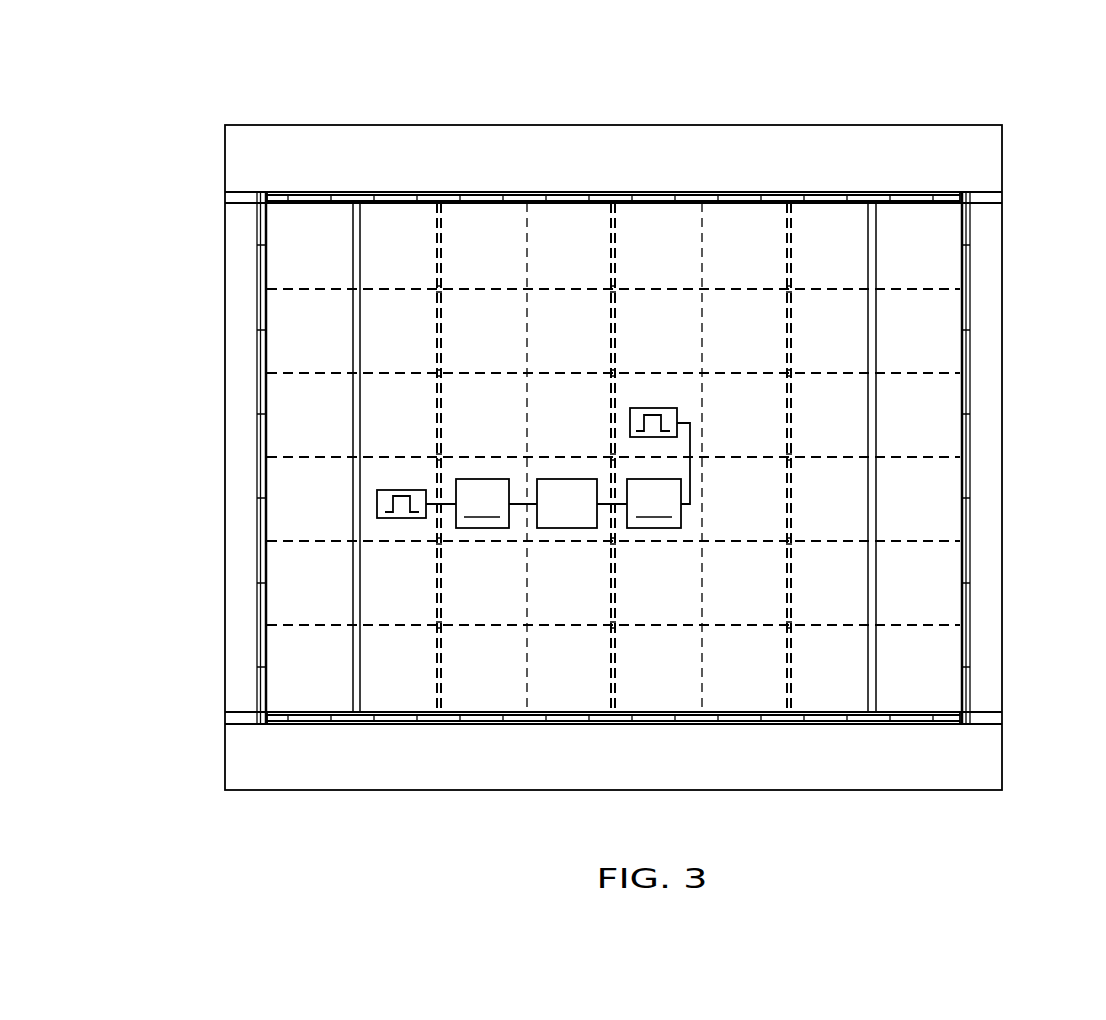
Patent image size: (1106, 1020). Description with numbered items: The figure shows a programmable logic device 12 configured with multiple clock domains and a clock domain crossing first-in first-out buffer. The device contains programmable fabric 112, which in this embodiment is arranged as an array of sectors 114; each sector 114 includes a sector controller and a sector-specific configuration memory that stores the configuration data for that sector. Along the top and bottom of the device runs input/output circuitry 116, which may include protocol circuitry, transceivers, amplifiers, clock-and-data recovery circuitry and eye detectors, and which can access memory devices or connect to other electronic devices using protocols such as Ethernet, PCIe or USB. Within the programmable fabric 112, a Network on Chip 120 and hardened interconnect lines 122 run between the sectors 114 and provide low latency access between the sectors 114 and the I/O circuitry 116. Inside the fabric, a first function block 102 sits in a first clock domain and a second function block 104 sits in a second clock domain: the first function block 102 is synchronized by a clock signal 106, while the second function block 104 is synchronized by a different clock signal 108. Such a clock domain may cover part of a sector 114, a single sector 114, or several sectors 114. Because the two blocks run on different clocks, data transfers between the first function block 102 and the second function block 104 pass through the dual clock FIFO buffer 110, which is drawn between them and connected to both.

The programmable logic device 12 is at (216, 118).
The first function block 102 is at (482, 503).
The second function block 104 is at (654, 503).
The clock signal 106 is at (402, 519).
The clock signal 108 is at (676, 408).
The dual clock FIFO buffer 110 is at (565, 479).
The programmable fabric 112 is at (937, 240).
The sector 114 is at (295, 252).
The input/output circuitry 116 is at (632, 168).
The Network on Chip 120 is at (441, 400).
The hardened interconnect lines 122 is at (362, 318).